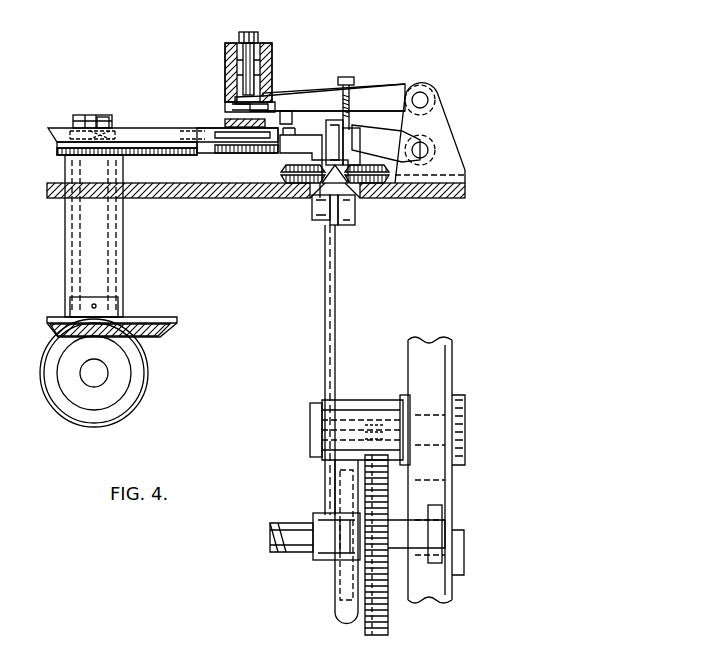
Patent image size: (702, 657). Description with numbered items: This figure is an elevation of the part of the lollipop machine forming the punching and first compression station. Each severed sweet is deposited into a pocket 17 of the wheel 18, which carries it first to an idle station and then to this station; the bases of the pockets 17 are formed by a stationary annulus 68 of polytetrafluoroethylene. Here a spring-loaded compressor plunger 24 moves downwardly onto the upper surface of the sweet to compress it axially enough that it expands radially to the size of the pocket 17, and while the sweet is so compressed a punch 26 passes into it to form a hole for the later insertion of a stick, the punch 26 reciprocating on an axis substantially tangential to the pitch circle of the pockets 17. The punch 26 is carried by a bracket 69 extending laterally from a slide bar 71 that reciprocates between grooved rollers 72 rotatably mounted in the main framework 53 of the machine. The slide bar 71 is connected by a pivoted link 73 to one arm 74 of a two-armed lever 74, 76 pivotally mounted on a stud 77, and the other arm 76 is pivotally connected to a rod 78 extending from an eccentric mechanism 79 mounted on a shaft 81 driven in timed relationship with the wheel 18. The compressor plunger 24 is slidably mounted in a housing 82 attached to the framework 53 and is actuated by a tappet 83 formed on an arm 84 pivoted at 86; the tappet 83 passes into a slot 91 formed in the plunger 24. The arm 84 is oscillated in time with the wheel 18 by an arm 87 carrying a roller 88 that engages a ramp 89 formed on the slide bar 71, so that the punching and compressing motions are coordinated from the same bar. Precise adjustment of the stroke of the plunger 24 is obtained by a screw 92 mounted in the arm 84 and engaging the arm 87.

The pocket 17 is at (187, 128).
The wheel 18 is at (126, 134).
The compressor plunger 24 is at (272, 102).
The punch 26 is at (255, 133).
The main framework 53 is at (132, 196).
The stationary annulus 68 is at (206, 149).
The bracket 69 is at (300, 146).
The slide bar 71 is at (348, 195).
The grooved rollers 72 is at (288, 190).
The pivoted link 73 is at (344, 218).
The arm of two-armed lever 74 is at (322, 328).
The arm of two-armed lever 76 is at (332, 491).
The stud 77 is at (312, 430).
The rod 78 is at (331, 560).
The eccentric mechanism 79 is at (350, 605).
The shaft 81 is at (290, 540).
The housing 82 is at (272, 50).
The tappet 83 is at (225, 100).
The arm 84 is at (388, 94).
The pivot 86 is at (426, 97).
The arm 87 is at (402, 134).
The roller 88 is at (335, 120).
The ramp 89 is at (318, 183).
The slot 91 is at (230, 114).
The screw 92 is at (347, 80).